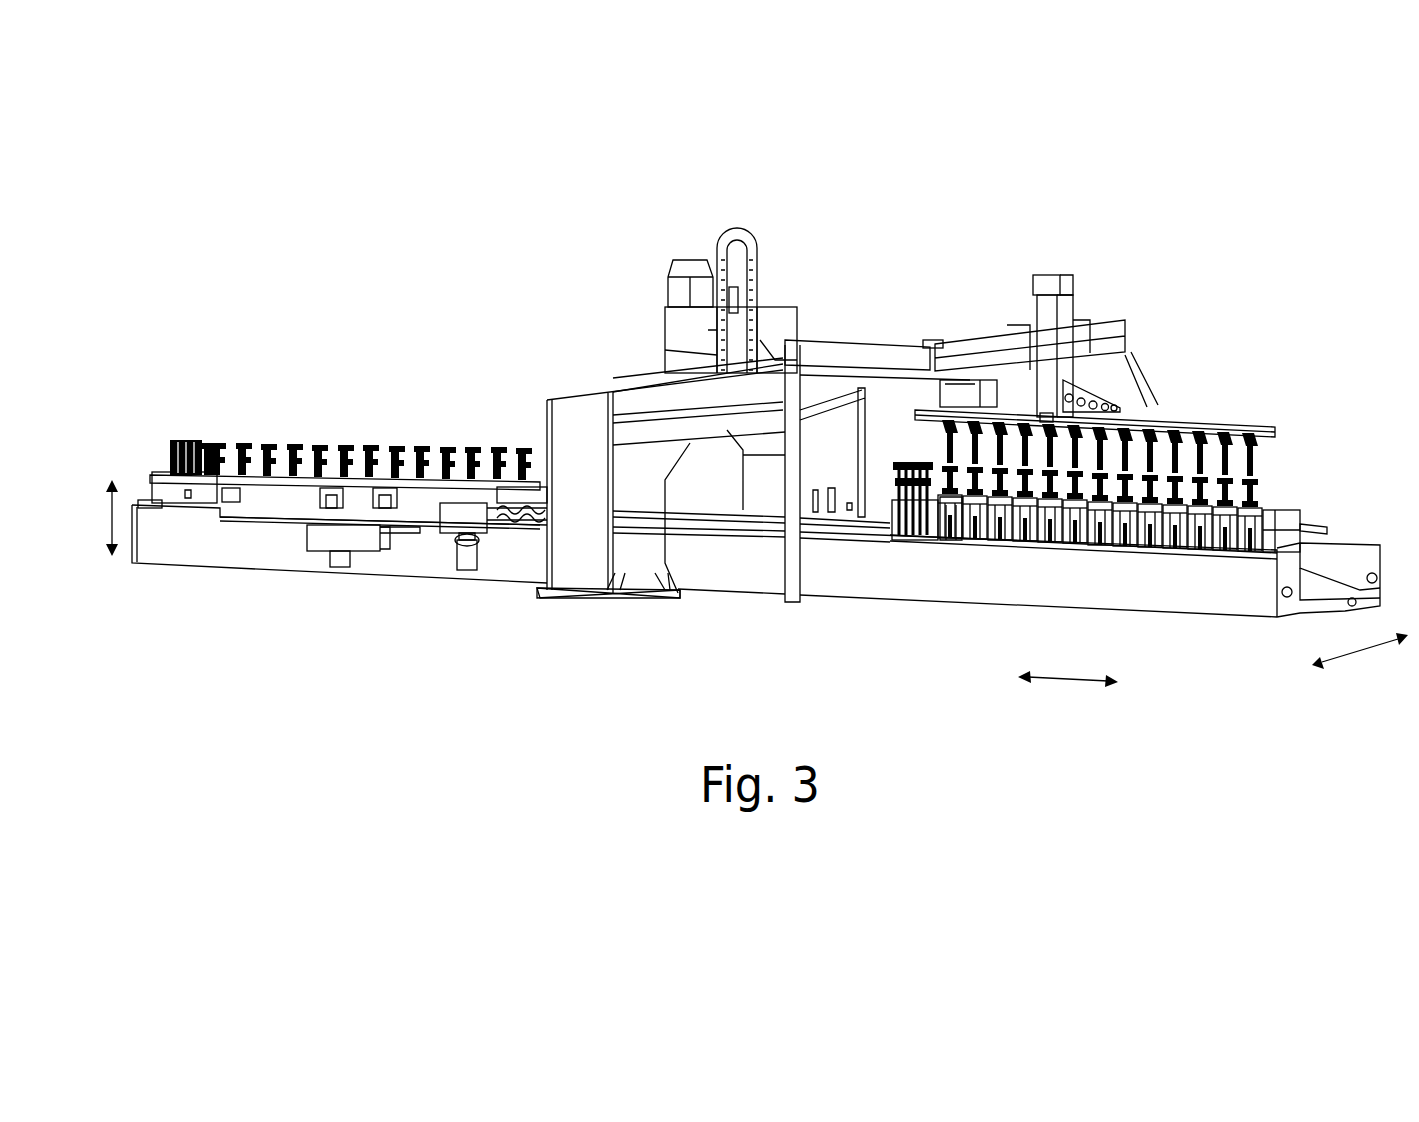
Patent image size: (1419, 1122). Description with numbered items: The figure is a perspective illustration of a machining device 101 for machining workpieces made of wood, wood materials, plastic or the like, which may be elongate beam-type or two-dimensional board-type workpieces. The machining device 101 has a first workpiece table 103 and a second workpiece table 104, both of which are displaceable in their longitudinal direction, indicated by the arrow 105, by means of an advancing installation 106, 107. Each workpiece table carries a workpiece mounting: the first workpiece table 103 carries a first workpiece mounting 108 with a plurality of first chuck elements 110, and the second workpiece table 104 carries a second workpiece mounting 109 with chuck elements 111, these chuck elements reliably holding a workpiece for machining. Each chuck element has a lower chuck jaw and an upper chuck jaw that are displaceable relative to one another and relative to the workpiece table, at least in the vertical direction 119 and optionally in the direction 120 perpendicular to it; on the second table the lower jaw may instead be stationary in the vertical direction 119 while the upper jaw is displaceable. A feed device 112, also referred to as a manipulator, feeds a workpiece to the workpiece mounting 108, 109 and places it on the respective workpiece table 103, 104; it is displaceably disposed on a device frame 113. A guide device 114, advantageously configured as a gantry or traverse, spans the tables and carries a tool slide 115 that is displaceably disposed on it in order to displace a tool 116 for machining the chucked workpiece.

The machining device 101 is at (928, 218).
The first workpiece table 103 is at (411, 497).
The second workpiece table 104 is at (1292, 518).
The arrow 105 is at (1060, 683).
The advancing installation 106 is at (260, 510).
The advancing installation 107 is at (1327, 532).
The first workpiece mounting 108 is at (381, 418).
The second workpiece mounting 109 is at (1268, 470).
The first chuck elements 110 is at (480, 462).
The chuck elements 111 is at (1268, 491).
The feed device 112 is at (1165, 415).
The device frame 113 is at (977, 347).
The guide device 114 is at (634, 424).
The tool slide 115 is at (698, 326).
The tool 116 is at (660, 376).
The vertical direction 119 is at (114, 556).
The direction perpendicular to the vertical direction 120 is at (1352, 653).